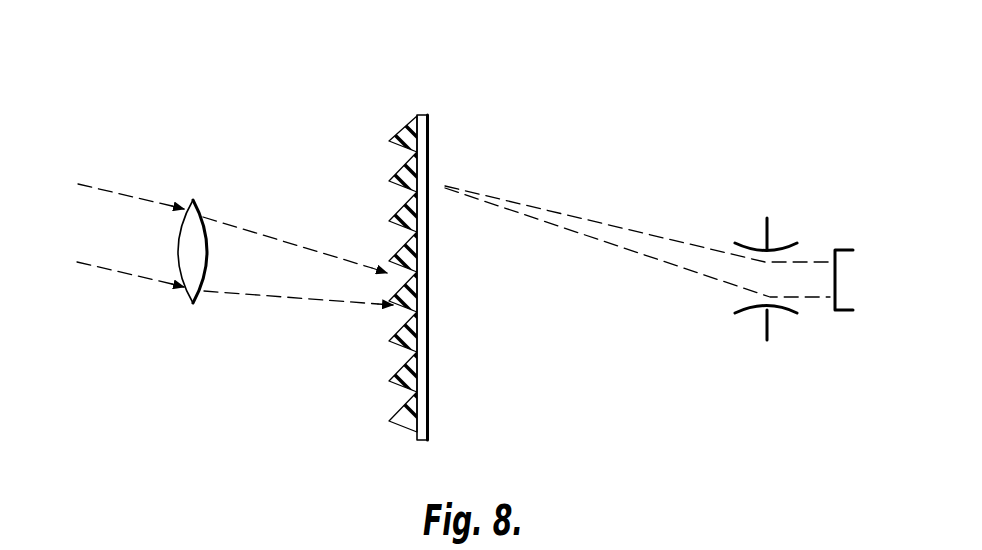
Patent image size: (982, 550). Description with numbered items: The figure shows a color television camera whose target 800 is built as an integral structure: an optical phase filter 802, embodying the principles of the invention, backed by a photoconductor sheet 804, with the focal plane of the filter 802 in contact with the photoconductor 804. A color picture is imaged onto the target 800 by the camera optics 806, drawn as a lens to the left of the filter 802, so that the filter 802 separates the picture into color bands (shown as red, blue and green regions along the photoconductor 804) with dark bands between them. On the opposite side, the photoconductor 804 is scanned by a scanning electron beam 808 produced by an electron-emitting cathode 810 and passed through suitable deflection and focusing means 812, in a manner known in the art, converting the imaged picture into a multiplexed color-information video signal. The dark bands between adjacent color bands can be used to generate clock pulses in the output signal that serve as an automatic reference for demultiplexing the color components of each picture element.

The television camera target 800 is at (442, 483).
The optical phase filter 802 is at (387, 168).
The photoconductor sheet 804 is at (421, 114).
The camera optics 806 is at (235, 276).
The scanning electron beam 808 is at (553, 218).
The electron-emitting cathode 810 is at (843, 250).
The deflection and focusing means 812 is at (752, 243).